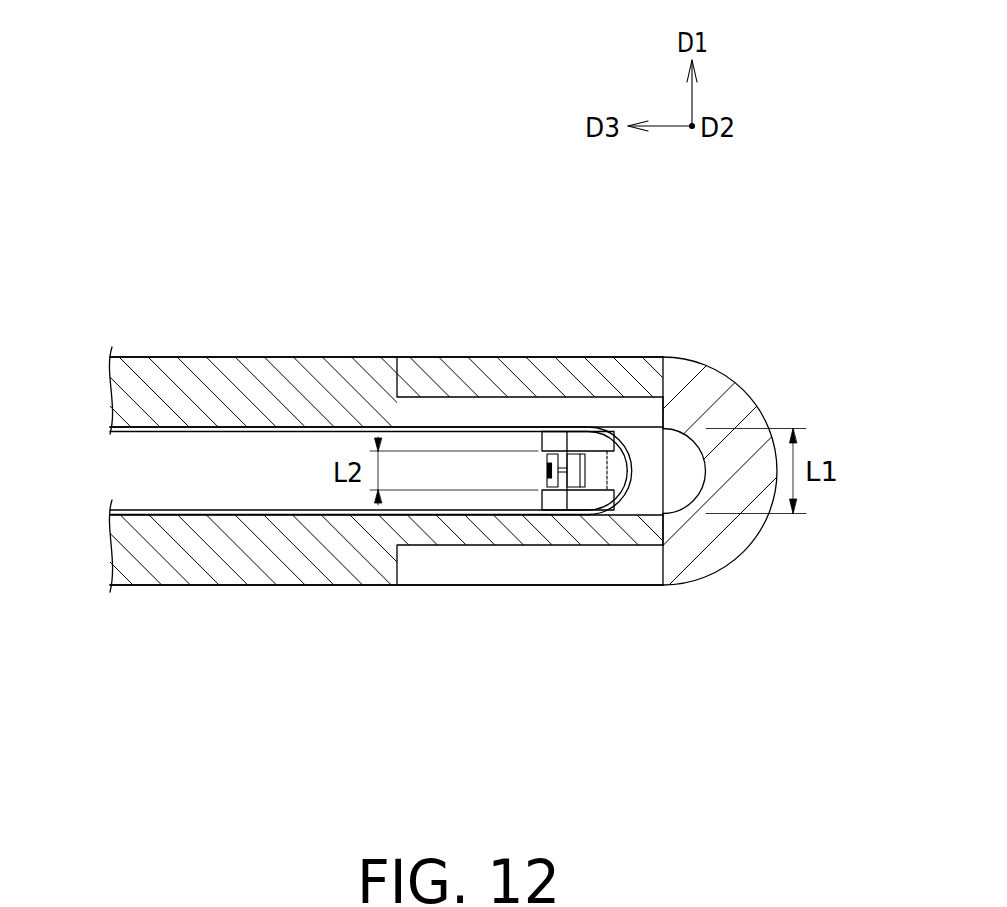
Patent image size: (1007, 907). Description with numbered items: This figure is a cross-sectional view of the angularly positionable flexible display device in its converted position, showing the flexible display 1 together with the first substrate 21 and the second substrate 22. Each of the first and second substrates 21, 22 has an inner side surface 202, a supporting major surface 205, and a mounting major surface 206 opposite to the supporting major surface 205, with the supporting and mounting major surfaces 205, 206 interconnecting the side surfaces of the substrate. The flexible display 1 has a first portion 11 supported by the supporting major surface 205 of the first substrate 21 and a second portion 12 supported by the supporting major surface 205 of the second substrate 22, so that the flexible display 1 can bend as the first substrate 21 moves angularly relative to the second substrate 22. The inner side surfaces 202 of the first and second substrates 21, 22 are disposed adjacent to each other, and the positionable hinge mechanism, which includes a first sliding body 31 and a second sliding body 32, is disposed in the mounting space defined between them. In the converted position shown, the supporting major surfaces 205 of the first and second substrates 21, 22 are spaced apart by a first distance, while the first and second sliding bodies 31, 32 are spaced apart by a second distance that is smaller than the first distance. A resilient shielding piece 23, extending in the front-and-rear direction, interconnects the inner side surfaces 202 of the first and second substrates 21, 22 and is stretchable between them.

The flexible display 1 is at (237, 438).
The first portion 11 is at (131, 432).
The second portion 12 is at (138, 510).
The first substrate 21 is at (313, 395).
The second substrate 22 is at (318, 545).
The resilient shielding piece 23 is at (713, 527).
The first sliding body 31 is at (585, 441).
The second sliding body 32 is at (590, 498).
The inner side surface 202 is at (663, 412).
The supporting major surface 205 is at (166, 427).
The mounting major surface 206 is at (251, 357).